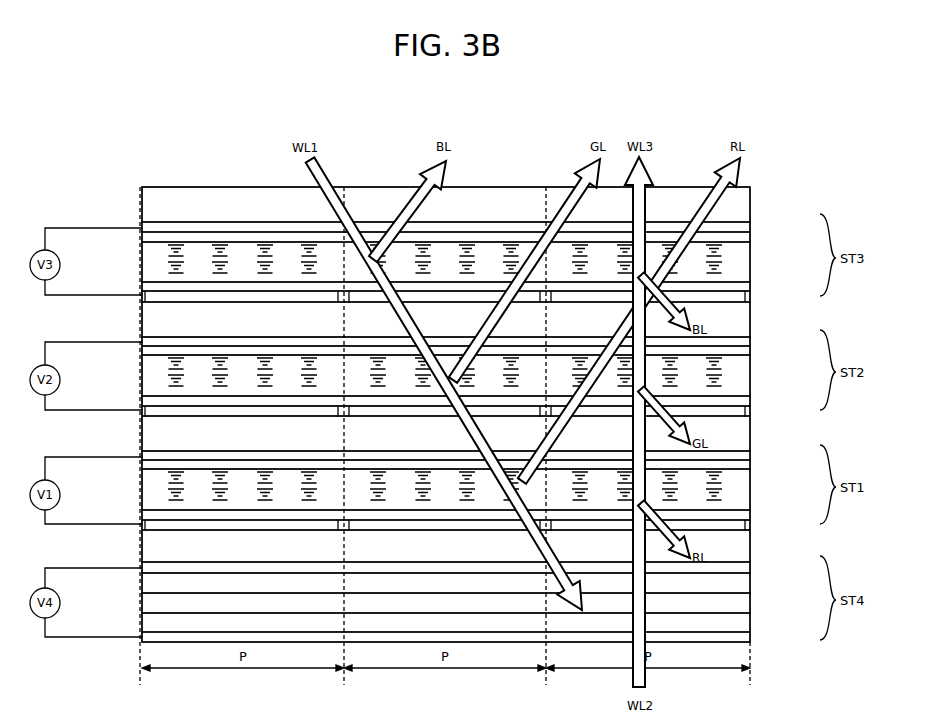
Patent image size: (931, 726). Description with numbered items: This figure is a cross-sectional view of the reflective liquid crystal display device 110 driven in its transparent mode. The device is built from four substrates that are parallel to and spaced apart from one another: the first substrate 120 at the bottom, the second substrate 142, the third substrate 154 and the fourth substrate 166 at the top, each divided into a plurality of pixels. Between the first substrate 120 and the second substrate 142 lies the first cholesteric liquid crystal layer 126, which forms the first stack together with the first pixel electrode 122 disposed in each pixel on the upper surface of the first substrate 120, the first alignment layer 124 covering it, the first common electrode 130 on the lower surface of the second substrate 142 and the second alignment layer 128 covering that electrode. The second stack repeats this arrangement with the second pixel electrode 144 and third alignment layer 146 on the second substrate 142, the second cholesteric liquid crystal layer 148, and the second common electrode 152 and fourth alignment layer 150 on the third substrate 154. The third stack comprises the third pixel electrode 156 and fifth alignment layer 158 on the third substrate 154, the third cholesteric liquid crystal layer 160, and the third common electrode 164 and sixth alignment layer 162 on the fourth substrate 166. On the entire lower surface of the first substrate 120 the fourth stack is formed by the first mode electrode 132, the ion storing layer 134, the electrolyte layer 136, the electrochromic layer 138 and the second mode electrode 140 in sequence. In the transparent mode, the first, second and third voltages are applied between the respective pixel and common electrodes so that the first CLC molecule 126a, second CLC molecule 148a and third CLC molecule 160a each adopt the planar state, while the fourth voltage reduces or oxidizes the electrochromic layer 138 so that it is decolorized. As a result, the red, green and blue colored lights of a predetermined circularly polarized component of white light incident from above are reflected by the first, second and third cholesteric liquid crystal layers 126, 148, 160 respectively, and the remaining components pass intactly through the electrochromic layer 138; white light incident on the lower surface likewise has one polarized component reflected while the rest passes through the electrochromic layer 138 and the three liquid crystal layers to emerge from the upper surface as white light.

The reflective liquid crystal display device 110 is at (435, 121).
The fourth substrate 166 is at (705, 213).
The third common electrode 164 is at (750, 227).
The sixth alignment layer 162 is at (750, 238).
The third cholesteric liquid crystal layer 160 is at (750, 263).
The third CLC molecule 160a is at (170, 247).
The fifth alignment layer 158 is at (750, 286).
The third pixel electrode 156 is at (750, 297).
The third substrate 154 is at (715, 326).
The second common electrode 152 is at (750, 341).
The fourth alignment layer 150 is at (750, 352).
The second cholesteric liquid crystal layer 148 is at (750, 376).
The second CLC molecule 148a is at (170, 361).
The third alignment layer 146 is at (750, 400).
The second pixel electrode 144 is at (750, 412).
The second substrate 142 is at (715, 440).
The first common electrode 130 is at (750, 456).
The second alignment layer 128 is at (750, 466).
The first cholesteric liquid crystal layer 126 is at (750, 490).
The first CLC molecule 126a is at (170, 475).
The first alignment layer 124 is at (750, 514).
The first pixel electrode 122 is at (750, 526).
The first substrate 120 is at (715, 555).
The first mode electrode 132 is at (750, 566).
The ion storing layer 134 is at (750, 586).
The electrolyte layer 136 is at (750, 604).
The electrochromic layer 138 is at (750, 623).
The second mode electrode 140 is at (750, 637).